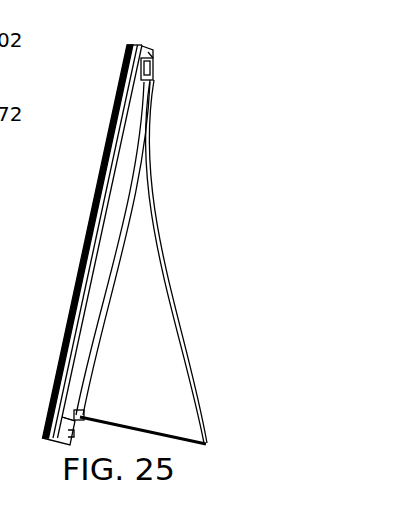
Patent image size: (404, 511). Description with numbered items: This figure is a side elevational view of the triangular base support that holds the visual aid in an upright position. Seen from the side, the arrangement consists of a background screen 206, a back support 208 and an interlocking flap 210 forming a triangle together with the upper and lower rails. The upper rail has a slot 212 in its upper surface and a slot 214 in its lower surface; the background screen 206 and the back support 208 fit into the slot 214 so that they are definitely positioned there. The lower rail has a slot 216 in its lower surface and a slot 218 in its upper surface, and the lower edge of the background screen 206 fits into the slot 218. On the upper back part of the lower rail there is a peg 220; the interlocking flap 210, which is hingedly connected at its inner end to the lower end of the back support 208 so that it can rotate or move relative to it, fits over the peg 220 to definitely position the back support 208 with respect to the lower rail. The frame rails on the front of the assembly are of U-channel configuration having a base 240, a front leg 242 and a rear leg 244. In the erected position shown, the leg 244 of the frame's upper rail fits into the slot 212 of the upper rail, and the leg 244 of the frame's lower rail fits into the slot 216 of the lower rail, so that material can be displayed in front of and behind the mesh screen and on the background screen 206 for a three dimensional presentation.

The background screen 206 is at (150, 248).
The back support 208 is at (167, 302).
The interlocking flap 210 is at (138, 425).
The slot 212 is at (153, 67).
The slot 214 is at (157, 78).
The slot 216 is at (73, 433).
The slot 218 is at (63, 418).
The peg 220 is at (85, 412).
The base 240 is at (140, 46).
The front leg 242 is at (126, 74).
The rear leg 244 is at (152, 57).